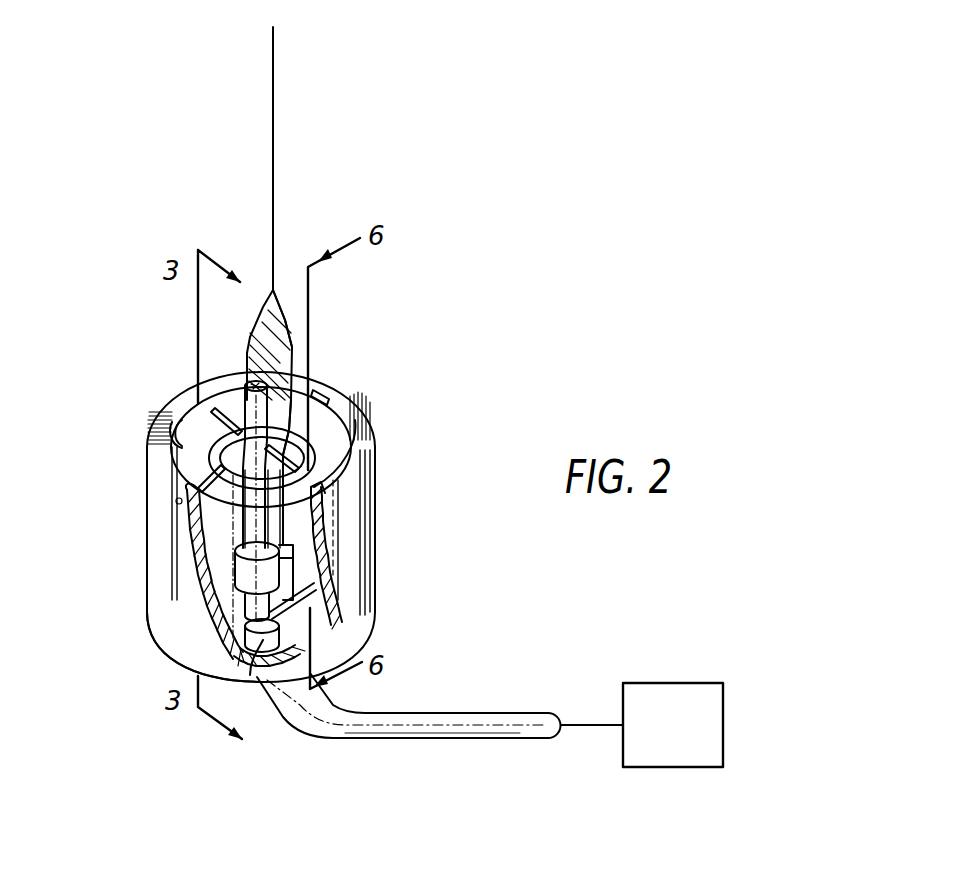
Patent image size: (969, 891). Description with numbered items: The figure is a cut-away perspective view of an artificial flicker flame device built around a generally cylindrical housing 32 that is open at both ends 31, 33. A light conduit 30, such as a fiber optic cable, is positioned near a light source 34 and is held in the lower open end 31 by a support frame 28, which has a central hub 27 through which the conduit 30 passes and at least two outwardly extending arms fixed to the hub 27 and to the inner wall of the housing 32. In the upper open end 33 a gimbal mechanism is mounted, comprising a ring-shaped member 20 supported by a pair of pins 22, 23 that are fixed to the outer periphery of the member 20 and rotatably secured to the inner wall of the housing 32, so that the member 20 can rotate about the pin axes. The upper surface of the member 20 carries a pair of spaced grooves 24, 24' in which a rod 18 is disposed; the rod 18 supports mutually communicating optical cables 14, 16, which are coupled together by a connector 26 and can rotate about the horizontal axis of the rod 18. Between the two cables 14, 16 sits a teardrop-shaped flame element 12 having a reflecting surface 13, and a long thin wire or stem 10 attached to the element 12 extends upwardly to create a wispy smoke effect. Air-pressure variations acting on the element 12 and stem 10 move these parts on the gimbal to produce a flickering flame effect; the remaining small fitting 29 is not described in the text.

The stem 10 is at (273, 133).
The flame shaped element 12 is at (300, 343).
The reflecting surface 13 is at (267, 313).
The optical cable 14 is at (290, 396).
The optical cable 16 is at (247, 395).
The rod 18 is at (300, 430).
The ring-shaped member 20 is at (333, 436).
The pin 22 is at (207, 458).
The pin 23 is at (293, 400).
The groove 24 is at (355, 509).
The groove 24' is at (189, 406).
The connector 26 is at (290, 562).
The central hub 27 is at (263, 640).
The support frame 28 is at (306, 598).
The connector nut 29 is at (278, 615).
The light conduit 30 is at (488, 713).
The open end 31 is at (152, 645).
The housing 32 is at (160, 566).
The open end 33 is at (182, 420).
The light source 34 is at (675, 683).